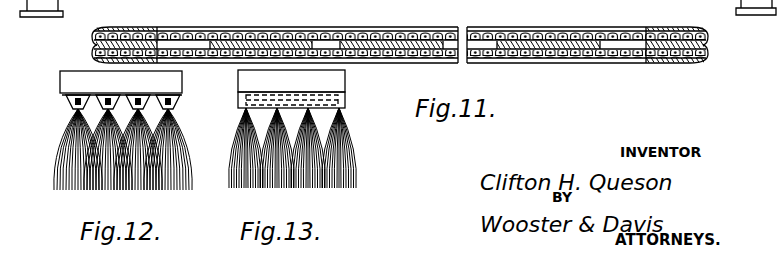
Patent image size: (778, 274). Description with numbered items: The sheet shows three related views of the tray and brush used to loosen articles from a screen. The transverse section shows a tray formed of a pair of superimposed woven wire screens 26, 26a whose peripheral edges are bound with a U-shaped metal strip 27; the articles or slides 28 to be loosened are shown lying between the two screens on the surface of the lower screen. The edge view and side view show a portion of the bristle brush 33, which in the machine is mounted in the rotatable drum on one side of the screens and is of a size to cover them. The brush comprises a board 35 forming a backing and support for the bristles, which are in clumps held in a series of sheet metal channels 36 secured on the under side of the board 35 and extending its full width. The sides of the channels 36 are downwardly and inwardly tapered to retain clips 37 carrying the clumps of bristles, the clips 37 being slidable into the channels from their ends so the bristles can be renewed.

In FIG. 11, the woven wire screen 26 is at (432, 58).
In FIG. 11, the woven wire screen 26a is at (440, 21).
In FIG. 11, the U-shaped metal strip 27 is at (91, 45).
In FIG. 11, the articles or slides 28 is at (257, 47).
In FIG. 12, the bristle brush 33 is at (67, 165).
In FIG. 13, the bristle brush 33 is at (346, 158).
In FIG. 12, the board 35 is at (62, 83).
In FIG. 13, the board 35 is at (333, 82).
In FIG. 12, the sheet metal channels 36 is at (173, 101).
In FIG. 13, the sheet metal channels 36 is at (345, 103).
In FIG. 12, the clips 37 is at (163, 97).
In FIG. 13, the clips 37 is at (294, 100).